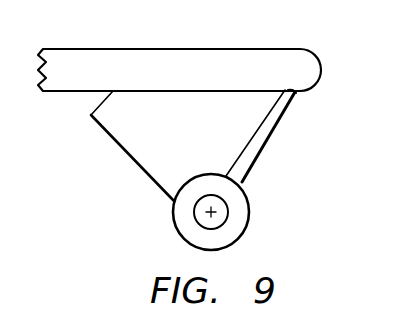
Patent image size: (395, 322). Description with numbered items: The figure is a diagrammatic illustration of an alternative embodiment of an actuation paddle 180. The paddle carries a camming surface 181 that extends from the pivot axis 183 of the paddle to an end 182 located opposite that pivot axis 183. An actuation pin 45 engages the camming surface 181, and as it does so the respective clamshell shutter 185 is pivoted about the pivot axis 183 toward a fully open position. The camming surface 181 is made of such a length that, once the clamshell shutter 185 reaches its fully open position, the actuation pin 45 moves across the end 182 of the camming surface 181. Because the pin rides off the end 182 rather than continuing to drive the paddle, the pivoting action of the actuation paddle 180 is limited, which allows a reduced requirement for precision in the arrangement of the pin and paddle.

The actuation pin 45 is at (144, 49).
The actuation paddle 180 is at (251, 169).
The camming surface 181 is at (252, 137).
The end of camming surface 182 is at (300, 94).
The pivot axis 183 is at (209, 214).
The clamshell shutter 185 is at (102, 101).